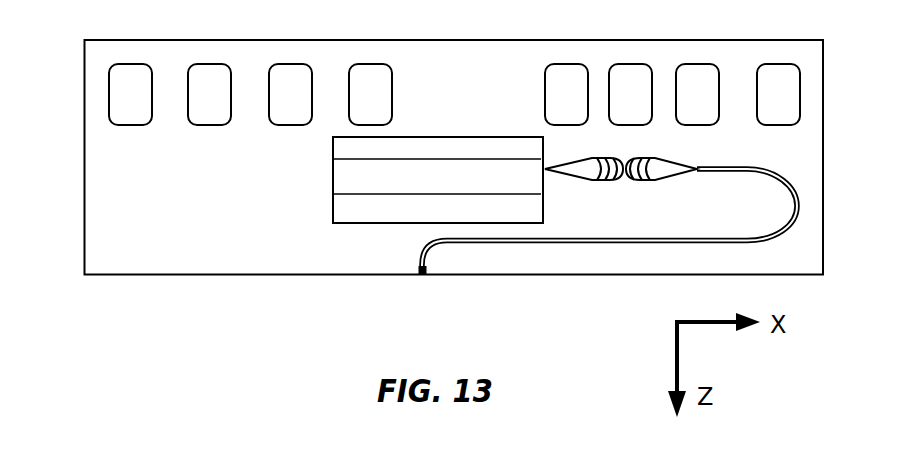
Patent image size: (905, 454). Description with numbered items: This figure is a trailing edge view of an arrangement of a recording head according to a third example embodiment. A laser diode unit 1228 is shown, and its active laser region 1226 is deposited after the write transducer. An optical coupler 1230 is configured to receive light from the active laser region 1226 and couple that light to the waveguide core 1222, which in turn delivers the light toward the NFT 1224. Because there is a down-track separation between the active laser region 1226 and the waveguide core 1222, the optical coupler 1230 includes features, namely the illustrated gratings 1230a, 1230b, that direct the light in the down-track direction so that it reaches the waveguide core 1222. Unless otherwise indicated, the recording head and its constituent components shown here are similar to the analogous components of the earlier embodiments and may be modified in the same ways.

The waveguide core 1222 is at (495, 243).
The NFT 1224 is at (422, 274).
The active laser region 1226 is at (370, 192).
The laser diode unit 1228 is at (333, 203).
The optical coupler 1230 is at (671, 228).
The grating 1230a is at (645, 158).
The grating 1230b is at (605, 180).